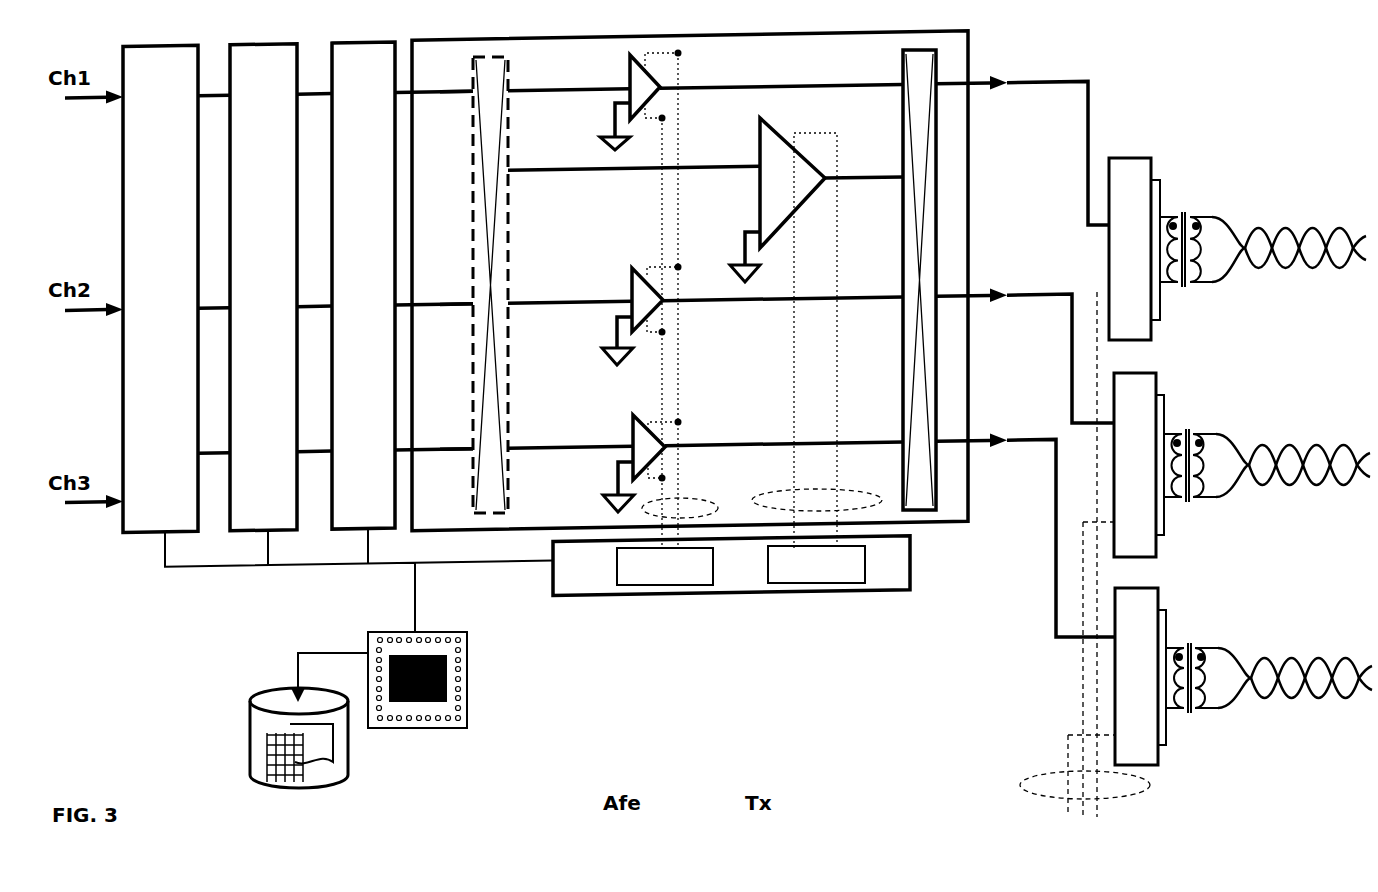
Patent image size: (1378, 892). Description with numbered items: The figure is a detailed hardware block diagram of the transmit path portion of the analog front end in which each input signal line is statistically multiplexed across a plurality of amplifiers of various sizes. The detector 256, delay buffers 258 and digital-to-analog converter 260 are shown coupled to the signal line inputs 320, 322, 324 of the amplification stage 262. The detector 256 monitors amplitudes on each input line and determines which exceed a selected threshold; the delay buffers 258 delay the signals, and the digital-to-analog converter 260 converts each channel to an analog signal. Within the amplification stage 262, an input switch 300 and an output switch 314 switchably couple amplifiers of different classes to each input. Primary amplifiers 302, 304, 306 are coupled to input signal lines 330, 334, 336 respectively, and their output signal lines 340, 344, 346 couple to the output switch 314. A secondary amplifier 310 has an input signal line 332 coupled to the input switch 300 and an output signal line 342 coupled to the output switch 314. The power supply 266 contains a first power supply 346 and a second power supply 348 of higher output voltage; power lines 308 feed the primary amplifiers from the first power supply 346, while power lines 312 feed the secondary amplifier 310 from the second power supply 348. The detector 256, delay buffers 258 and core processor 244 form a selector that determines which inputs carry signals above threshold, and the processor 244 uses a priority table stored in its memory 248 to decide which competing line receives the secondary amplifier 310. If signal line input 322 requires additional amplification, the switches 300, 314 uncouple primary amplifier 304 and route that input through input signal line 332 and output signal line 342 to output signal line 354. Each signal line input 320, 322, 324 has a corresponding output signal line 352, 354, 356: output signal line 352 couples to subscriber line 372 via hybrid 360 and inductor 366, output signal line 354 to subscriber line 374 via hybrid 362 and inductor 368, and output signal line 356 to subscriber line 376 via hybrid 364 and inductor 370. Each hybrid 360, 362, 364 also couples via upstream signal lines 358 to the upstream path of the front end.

The core processor 244 is at (467, 676).
The memory 248 is at (281, 693).
The detector 256 is at (172, 72).
The delay buffers 258 is at (263, 68).
The digital-to-analog converter 260 is at (379, 64).
The amplification stage 262 is at (903, 30).
The power supply 266 is at (700, 596).
The input switch 300 is at (508, 248).
The primary amplifier 302 is at (637, 82).
The primary amplifier 304 is at (636, 276).
The primary amplifier 306 is at (637, 420).
The power lines 308 is at (692, 498).
The secondary amplifier 310 is at (762, 140).
The power lines 312 is at (825, 492).
The output switch 314 is at (906, 117).
The signal line input 320 is at (432, 90).
The signal line input 322 is at (460, 303).
The signal line input 324 is at (452, 448).
The input signal line 330 is at (537, 92).
The input signal line 332 is at (530, 172).
The input signal line 334 is at (540, 302).
The input signal line 336 is at (540, 448).
The output signal line 340 is at (733, 84).
The output signal line 342 is at (848, 177).
The output signal line 344 is at (727, 300).
The first power supply 346 is at (716, 445).
The second power supply 348 is at (780, 556).
The output signal line 352 is at (1037, 84).
The output signal line 354 is at (1022, 292).
The output signal line 356 is at (1015, 439).
The upstream signal lines 358 is at (1033, 777).
The hybrid 360 is at (1126, 150).
The hybrid 362 is at (1150, 380).
The hybrid 364 is at (1157, 588).
The inductor 366 is at (1190, 190).
The inductor 368 is at (1193, 410).
The inductor 370 is at (1197, 622).
The subscriber line 372 is at (1305, 232).
The subscriber line 374 is at (1310, 450).
The subscriber line 376 is at (1312, 665).